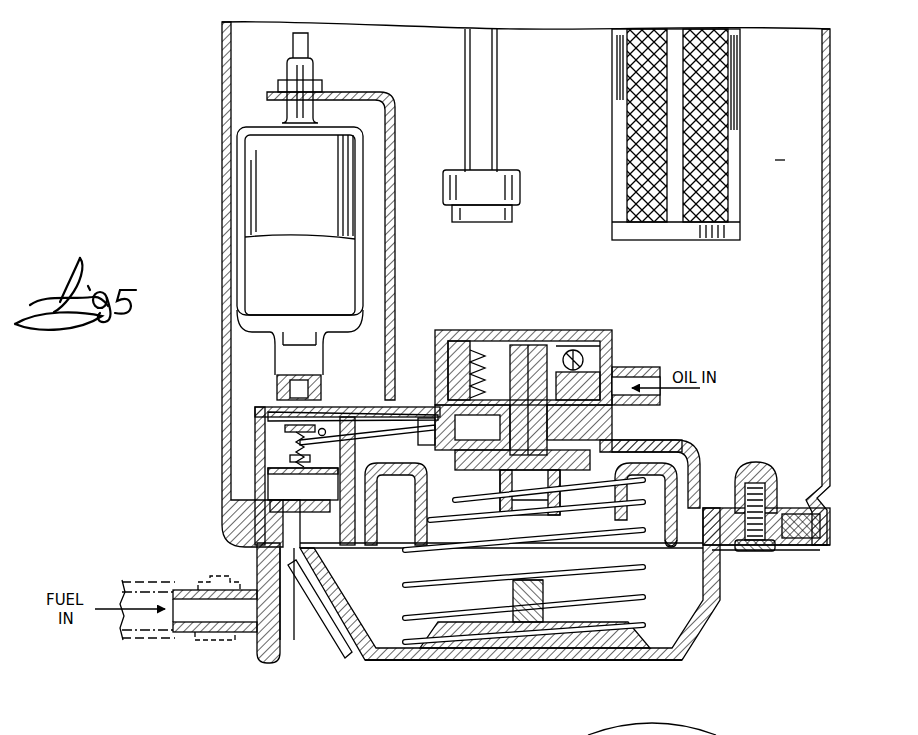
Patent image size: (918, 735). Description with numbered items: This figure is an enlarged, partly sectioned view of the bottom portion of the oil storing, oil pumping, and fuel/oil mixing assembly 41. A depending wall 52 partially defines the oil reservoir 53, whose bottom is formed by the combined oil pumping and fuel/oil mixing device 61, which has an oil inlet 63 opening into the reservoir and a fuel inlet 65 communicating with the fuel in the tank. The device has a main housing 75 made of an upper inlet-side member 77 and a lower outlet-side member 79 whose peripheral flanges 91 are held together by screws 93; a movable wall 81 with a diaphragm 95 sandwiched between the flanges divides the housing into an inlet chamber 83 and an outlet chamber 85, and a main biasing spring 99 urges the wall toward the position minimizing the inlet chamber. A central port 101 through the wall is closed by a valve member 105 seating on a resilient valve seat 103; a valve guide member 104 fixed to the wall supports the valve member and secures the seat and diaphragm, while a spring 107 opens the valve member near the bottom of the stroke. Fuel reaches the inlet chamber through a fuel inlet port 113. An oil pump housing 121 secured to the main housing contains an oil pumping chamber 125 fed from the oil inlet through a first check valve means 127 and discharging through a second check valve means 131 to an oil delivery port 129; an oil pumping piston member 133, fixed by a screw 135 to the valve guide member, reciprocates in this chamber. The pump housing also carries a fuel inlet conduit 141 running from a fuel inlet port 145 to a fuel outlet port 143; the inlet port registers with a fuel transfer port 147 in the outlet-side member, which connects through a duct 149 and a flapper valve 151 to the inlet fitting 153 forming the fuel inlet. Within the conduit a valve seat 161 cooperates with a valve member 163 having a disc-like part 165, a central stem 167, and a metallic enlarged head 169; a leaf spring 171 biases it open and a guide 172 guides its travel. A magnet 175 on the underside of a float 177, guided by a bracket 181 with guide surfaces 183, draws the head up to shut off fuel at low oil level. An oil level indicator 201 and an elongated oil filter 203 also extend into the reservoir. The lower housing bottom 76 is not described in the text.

The oil storing, oil pumping, and fuel/oil mixing assembly 41 is at (219, 228).
The depending wall 52 is at (830, 256).
The oil reservoir 53 is at (785, 160).
The combined oil pumping and fuel/oil mixing device 61 is at (385, 668).
The oil inlet 63 is at (650, 370).
The fuel inlet 65 is at (203, 634).
The main housing 75 is at (722, 592).
The pump body bottom 76 is at (535, 666).
The inlet-side member 77 is at (700, 472).
The outlet-side member 79 is at (800, 548).
The movable wall 81 is at (425, 547).
The inlet chamber 83 is at (688, 440).
The outlet chamber 85 is at (660, 610).
The peripheral flanges 91 is at (790, 515).
The screws 93 is at (752, 553).
The diaphragm 95 is at (702, 545).
The main biasing spring 99 is at (433, 612).
The port 101 is at (497, 537).
The valve seat 103 is at (580, 556).
The valve guide member 104 is at (590, 512).
The valve member 105 is at (622, 446).
The spring 107 is at (498, 568).
The fuel inlet port 113 is at (440, 522).
The oil pump housing 121 is at (440, 330).
The oil pumping chamber 125 is at (525, 330).
The first check valve means 127 is at (590, 345).
The oil delivery port 129 is at (425, 418).
The second check valve means 131 is at (478, 345).
The oil pumping piston member 133 is at (566, 349).
The screw 135 is at (528, 400).
The fuel inlet conduit 141 is at (332, 418).
The fuel outlet port 143 is at (327, 428).
The fuel inlet port 145 is at (263, 530).
The fuel transfer port 147 is at (268, 556).
The duct 149 is at (312, 595).
The flapper valve 151 is at (270, 652).
The inlet fitting 153 is at (238, 640).
The valve seat 161 is at (290, 458).
The valve member 163 is at (285, 500).
The disc-like part 165 is at (303, 484).
The central stem 167 is at (285, 428).
The enlarged head 169 is at (268, 412).
The leaf spring 171 is at (308, 410).
The guide 172 is at (296, 445).
The magnet 175 is at (277, 385).
The float 177 is at (250, 165).
The bracket 181 is at (397, 163).
The guide surfaces 183 is at (320, 88).
The oil level indicator 201 is at (498, 105).
The oil filter 203 is at (746, 130).